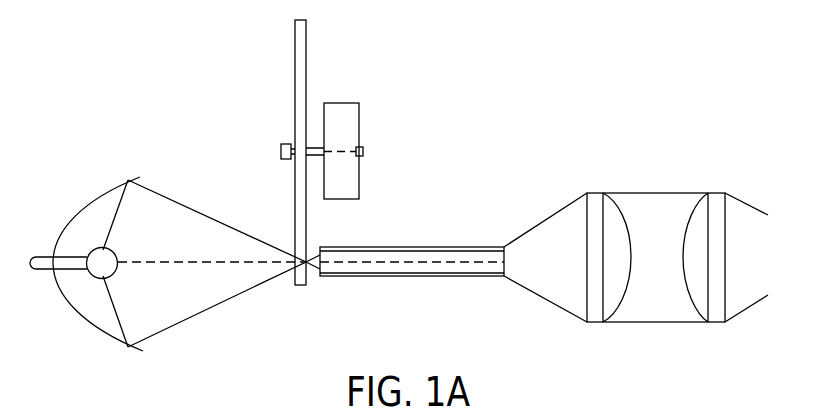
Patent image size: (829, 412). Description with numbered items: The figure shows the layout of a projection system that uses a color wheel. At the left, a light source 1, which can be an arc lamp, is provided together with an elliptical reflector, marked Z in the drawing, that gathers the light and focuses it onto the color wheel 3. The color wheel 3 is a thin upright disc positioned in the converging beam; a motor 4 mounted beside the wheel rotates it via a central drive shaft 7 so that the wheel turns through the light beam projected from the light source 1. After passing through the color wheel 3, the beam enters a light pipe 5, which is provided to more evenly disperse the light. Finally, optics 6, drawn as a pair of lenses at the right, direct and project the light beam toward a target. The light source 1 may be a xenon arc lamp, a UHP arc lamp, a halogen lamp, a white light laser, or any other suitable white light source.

The light source 1 is at (163, 224).
The reflector Z is at (63, 223).
The color wheel 3 is at (306, 43).
The motor 4 is at (351, 125).
The light pipe 5 is at (392, 277).
The optics 6 is at (725, 333).
The central drive shaft 7 is at (279, 152).